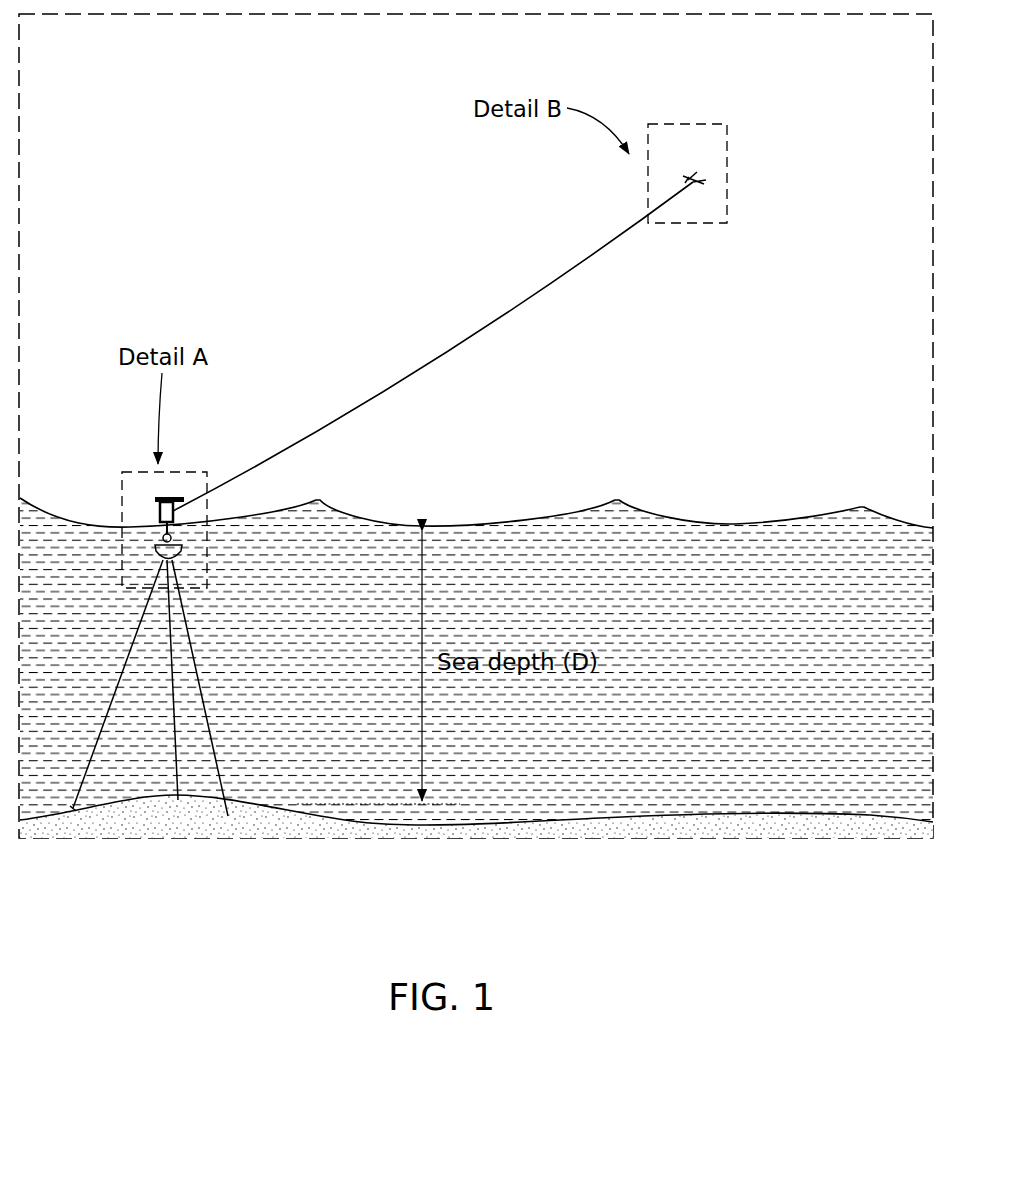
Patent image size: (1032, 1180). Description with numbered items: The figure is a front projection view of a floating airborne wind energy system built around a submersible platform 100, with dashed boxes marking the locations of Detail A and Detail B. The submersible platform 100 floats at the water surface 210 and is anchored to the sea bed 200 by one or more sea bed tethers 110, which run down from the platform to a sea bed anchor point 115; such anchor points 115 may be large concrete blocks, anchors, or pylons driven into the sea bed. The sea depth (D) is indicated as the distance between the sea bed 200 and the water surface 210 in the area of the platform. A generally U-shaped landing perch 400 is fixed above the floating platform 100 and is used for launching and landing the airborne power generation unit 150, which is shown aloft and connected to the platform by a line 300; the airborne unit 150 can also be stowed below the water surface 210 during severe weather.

The submersible platform 100 is at (187, 549).
The sea bed tether 110 is at (190, 617).
The sea bed anchor point 115 is at (71, 803).
The airborne power generation unit 150 is at (701, 188).
The sea bed 200 is at (188, 822).
The water surface 210 is at (423, 522).
The tether 300 is at (397, 356).
The landing perch 400 is at (158, 496).